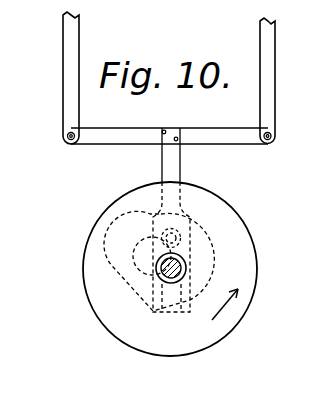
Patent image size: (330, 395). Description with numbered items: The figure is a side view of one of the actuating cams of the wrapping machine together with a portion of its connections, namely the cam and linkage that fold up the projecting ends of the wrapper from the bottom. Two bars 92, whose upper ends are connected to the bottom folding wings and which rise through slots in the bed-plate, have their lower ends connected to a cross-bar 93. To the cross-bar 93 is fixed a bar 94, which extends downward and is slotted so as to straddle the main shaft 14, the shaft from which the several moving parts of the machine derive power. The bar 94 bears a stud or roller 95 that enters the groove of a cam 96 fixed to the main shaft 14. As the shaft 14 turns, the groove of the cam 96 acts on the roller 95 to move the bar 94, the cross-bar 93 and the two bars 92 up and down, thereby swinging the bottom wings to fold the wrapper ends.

The bar 92 is at (72, 95).
The cross-bar 93 is at (137, 145).
The bar 94 is at (172, 163).
The stud or roller 95 is at (182, 235).
The cam 96 is at (244, 237).
The main shaft 14 is at (171, 268).